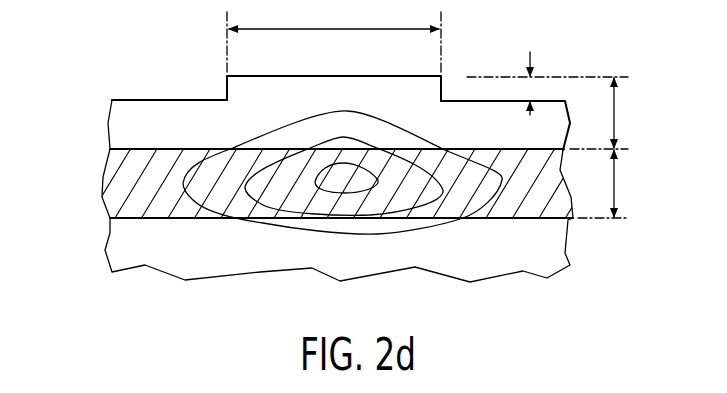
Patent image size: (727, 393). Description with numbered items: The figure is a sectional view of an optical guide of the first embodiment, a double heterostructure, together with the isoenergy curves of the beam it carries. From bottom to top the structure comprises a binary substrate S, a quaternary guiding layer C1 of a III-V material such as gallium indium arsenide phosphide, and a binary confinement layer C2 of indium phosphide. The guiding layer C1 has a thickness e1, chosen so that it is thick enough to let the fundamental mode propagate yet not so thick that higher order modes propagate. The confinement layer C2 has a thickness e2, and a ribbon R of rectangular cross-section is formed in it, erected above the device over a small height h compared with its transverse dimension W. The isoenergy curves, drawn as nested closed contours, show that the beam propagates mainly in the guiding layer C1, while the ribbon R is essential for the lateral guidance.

The binary confinement layer C2 is at (126, 118).
The guiding layer C1 is at (122, 182).
The binary substrate S is at (125, 237).
The transverse dimension W is at (334, 36).
The ribbon R is at (420, 88).
The height h is at (530, 89).
The thickness of the binary layer e2 is at (609, 113).
The thickness of the guiding layer e1 is at (613, 184).